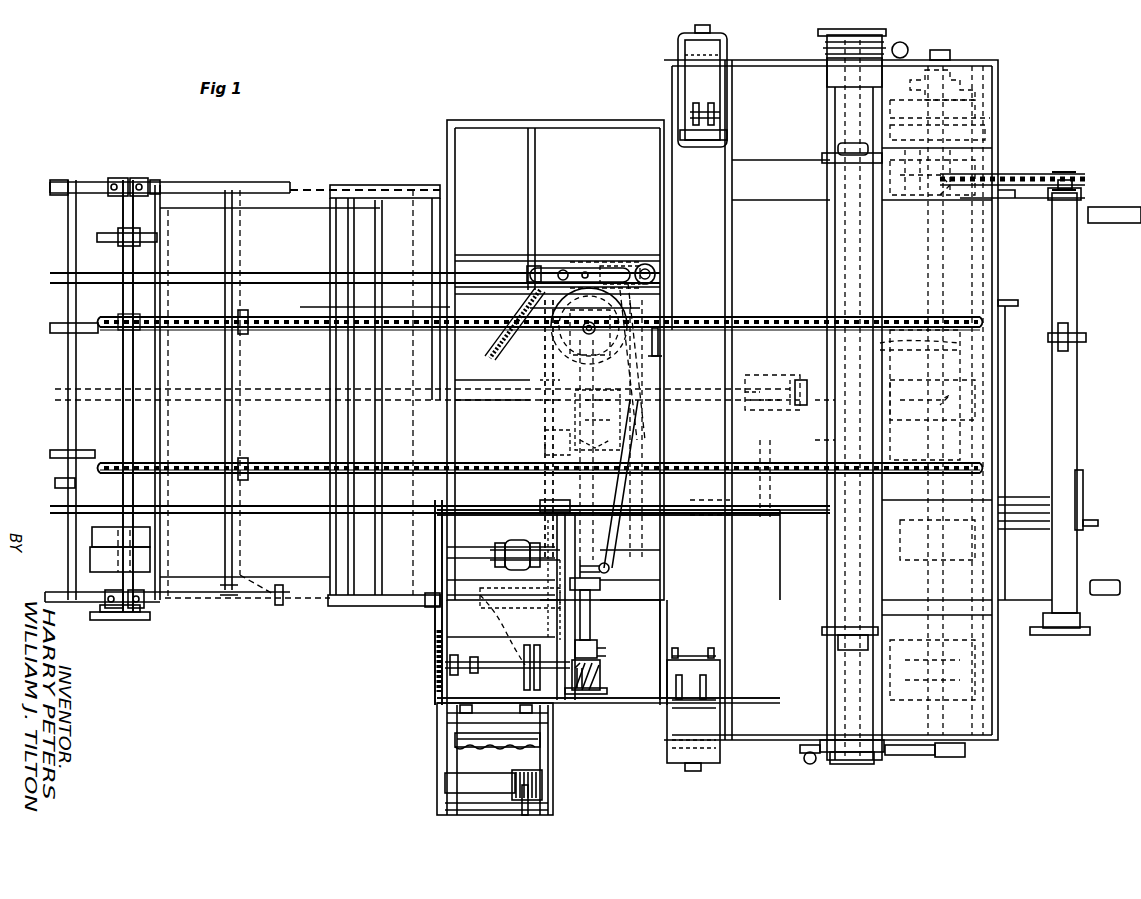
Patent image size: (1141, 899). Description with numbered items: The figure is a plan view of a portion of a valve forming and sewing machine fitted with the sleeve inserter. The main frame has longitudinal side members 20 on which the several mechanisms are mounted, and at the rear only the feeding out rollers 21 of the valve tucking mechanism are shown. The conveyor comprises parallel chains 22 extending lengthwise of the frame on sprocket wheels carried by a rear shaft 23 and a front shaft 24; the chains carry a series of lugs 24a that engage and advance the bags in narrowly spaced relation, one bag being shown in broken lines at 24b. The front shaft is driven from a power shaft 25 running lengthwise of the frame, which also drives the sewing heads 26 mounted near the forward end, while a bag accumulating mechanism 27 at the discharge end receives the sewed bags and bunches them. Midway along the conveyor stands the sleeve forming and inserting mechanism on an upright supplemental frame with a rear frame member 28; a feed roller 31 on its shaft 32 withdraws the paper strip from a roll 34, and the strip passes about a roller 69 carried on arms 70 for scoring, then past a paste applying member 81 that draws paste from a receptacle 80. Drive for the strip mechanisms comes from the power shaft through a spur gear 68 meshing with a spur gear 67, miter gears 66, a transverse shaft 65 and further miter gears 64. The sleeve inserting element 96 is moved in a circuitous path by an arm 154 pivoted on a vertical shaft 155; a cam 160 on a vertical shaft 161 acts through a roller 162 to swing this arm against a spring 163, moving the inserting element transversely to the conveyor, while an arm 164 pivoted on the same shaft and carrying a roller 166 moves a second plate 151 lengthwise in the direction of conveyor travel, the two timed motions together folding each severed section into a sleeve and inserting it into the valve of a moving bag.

The longitudinal side members 20 is at (263, 290).
The feeding out rollers 21 is at (70, 333).
The parallel chains 22 is at (285, 335).
The rear shaft 23 is at (124, 368).
The front shaft 24 is at (940, 340).
The lugs 24a is at (244, 310).
The bag 24b is at (314, 190).
The power shaft 25 is at (707, 405).
The sewing heads 26 is at (828, 243).
The bag accumulating mechanism 27 is at (1058, 268).
The rear frame member 28 is at (440, 577).
The feed roller 31 is at (505, 595).
The shaft 32 is at (535, 540).
The roll 34 is at (512, 740).
The miter gears 64 is at (600, 680).
The shaft 65 is at (595, 612).
The miter gears 66 is at (580, 408).
The spur gear 67 is at (545, 444).
The spur gear 68 is at (544, 378).
The roller 69 is at (468, 790).
The arms 70 is at (550, 795).
The receptacle 80 is at (458, 692).
The paste applying member 81 is at (523, 683).
The sleeve inserting element 96 is at (495, 612).
The second plate 151 is at (608, 572).
The arm 154 is at (555, 268).
The vertical shaft 155 is at (657, 268).
The cam 160 is at (552, 335).
The vertical shaft 161 is at (584, 331).
The roller 162 is at (596, 260).
The spring 163 is at (520, 298).
The arm 164 is at (612, 535).
The roller 166 is at (652, 362).